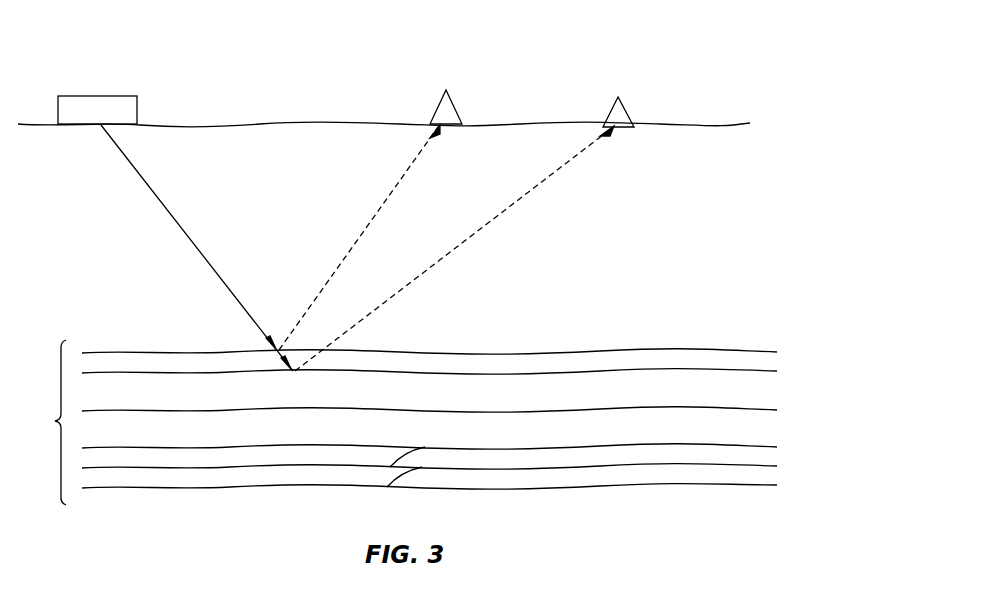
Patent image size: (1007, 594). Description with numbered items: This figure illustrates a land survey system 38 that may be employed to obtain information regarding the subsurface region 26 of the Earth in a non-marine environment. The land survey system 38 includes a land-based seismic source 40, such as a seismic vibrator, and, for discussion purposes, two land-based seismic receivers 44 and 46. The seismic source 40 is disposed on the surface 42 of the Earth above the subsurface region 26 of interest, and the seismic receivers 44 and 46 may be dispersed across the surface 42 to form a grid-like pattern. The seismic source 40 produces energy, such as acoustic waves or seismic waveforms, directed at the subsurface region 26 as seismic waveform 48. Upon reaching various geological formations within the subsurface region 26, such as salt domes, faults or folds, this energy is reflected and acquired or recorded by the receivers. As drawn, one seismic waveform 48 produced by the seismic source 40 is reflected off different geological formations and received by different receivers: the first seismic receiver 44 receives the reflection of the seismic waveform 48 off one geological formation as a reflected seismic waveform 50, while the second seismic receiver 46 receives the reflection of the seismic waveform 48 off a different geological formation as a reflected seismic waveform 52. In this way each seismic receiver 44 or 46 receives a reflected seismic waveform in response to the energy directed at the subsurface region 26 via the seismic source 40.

The subsurface region 26 is at (54, 421).
The land survey system 38 is at (580, 32).
The seismic source 40 is at (100, 94).
The surface 42 is at (322, 125).
The first seismic receiver 44 is at (452, 98).
The second seismic receiver 46 is at (626, 103).
The seismic waveform 48 is at (168, 209).
The reflected seismic waveform 50 is at (386, 203).
The reflected seismic waveform 52 is at (475, 237).